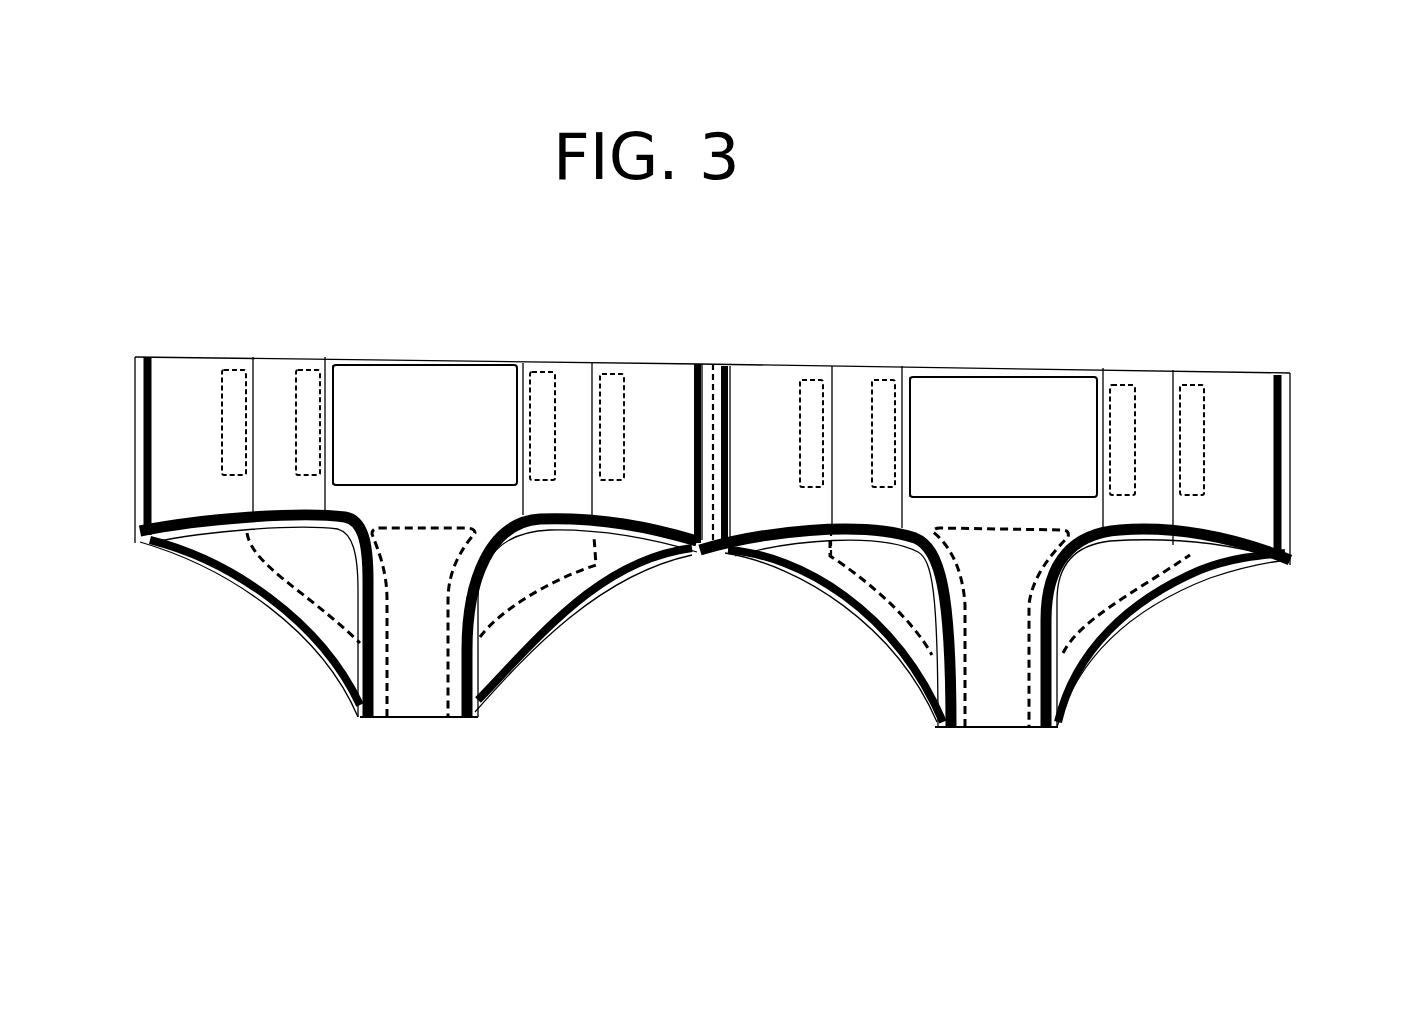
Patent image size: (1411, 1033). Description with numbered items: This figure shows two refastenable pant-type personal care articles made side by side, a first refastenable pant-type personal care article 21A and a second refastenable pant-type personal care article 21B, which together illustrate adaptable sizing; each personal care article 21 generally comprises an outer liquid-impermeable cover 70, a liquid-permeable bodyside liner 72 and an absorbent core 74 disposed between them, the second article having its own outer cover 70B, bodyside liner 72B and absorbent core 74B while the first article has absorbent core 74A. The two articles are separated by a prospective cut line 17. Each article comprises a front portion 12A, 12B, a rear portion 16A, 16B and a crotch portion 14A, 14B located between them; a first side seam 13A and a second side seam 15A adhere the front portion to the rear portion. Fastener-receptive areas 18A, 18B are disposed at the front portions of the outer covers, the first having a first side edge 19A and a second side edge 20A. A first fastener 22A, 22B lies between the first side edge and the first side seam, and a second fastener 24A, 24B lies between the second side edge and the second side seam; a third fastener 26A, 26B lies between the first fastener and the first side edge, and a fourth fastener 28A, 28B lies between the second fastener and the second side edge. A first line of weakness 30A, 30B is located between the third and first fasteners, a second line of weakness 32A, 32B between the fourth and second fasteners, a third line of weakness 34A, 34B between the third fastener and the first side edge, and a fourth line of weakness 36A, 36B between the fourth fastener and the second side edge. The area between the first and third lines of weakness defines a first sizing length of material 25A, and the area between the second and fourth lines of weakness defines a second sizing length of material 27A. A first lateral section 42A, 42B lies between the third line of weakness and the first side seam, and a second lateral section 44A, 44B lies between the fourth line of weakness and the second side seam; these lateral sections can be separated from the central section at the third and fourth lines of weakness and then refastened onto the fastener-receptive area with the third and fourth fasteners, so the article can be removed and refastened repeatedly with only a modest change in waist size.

The personal care article 21 is at (997, 240).
The first refastenable pant-type personal care article 21A is at (124, 320).
The second refastenable pant-type personal care article 21B is at (1210, 298).
The first lateral section 42A is at (163, 357).
The first lateral section 42B is at (762, 367).
The first side seam 13A is at (150, 448).
The first fastener 22A is at (220, 378).
The first fastener 22B is at (810, 378).
The first line of weakness 30A is at (255, 378).
The first line of weakness 30B is at (838, 380).
The third fastener 26A is at (285, 377).
The third fastener 26B is at (882, 378).
The third line of weakness 34A is at (327, 378).
The third line of weakness 34B is at (903, 382).
The front portion 12A is at (356, 372).
The front portion 12B is at (955, 375).
The fastener-receptive area 18A is at (440, 375).
The fastener-receptive area 18B is at (990, 378).
The first side edge 19A is at (333, 442).
The second side edge 20A is at (517, 452).
The fourth line of weakness 36A is at (527, 378).
The fourth line of weakness 36B is at (1107, 385).
The fourth fastener 28A is at (543, 375).
The fourth fastener 28B is at (1123, 383).
The second line of weakness 32A is at (587, 377).
The second line of weakness 32B is at (1175, 392).
The second fastener 24A is at (610, 376).
The second fastener 24B is at (1197, 381).
The second lateral section 44A is at (683, 363).
The second lateral section 44B is at (1243, 372).
The prospective cut line 17 is at (716, 410).
The second side seam 15A is at (727, 550).
The outer liquid-impermeable cover 70B is at (1257, 374).
The outer liquid-impermeable cover 70 is at (1262, 452).
The first sizing length of material 25A is at (283, 490).
The absorbent core 74A is at (288, 612).
The absorbent core 74B is at (865, 622).
The absorbent core 74 is at (1110, 650).
The crotch portion 14A is at (433, 718).
The crotch portion 14B is at (983, 728).
The second sizing length of material 27A is at (570, 500).
The rear portion 16A is at (637, 567).
The rear portion 16B is at (800, 570).
The liquid-permeable bodyside liner 72B is at (1190, 558).
The liquid-permeable bodyside liner 72 is at (1116, 590).